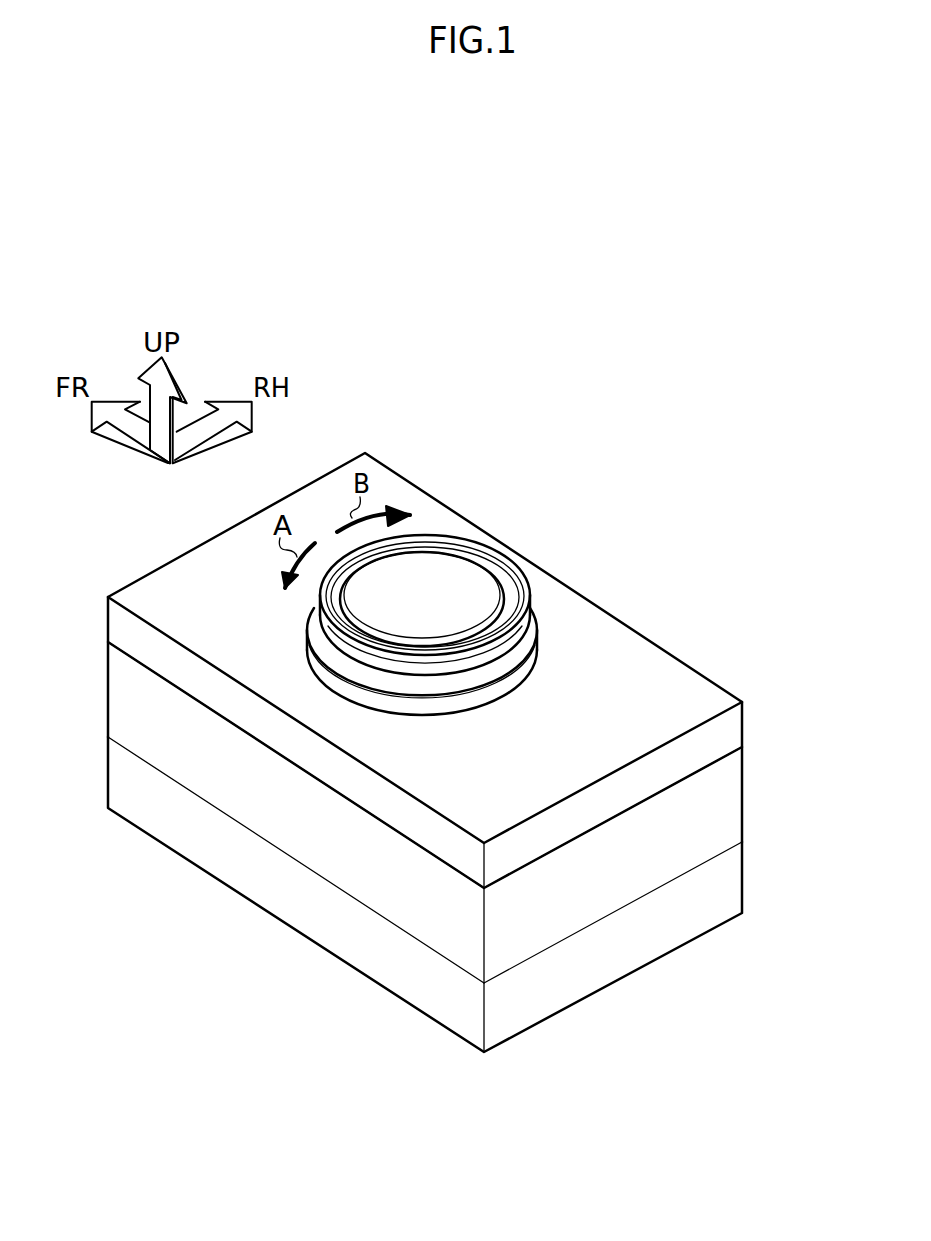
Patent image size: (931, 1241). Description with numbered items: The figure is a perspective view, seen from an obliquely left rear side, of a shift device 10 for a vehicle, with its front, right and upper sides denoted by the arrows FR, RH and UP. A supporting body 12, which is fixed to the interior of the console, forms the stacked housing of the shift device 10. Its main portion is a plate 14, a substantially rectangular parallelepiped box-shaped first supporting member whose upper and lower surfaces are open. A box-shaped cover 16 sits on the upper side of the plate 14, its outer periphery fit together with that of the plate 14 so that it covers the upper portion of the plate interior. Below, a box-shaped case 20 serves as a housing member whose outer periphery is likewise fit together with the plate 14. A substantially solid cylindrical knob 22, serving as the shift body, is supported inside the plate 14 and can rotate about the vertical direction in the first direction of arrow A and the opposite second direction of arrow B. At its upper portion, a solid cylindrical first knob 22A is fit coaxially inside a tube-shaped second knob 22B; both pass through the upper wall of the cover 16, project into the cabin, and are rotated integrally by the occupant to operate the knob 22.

The shift device 10 is at (580, 525).
The supporting body 12 is at (438, 498).
The plate 14 is at (742, 800).
The cover 16 is at (683, 688).
The case 20 is at (742, 878).
The knob 22 is at (468, 543).
The first knob 22A is at (472, 600).
The second knob 22B is at (513, 650).